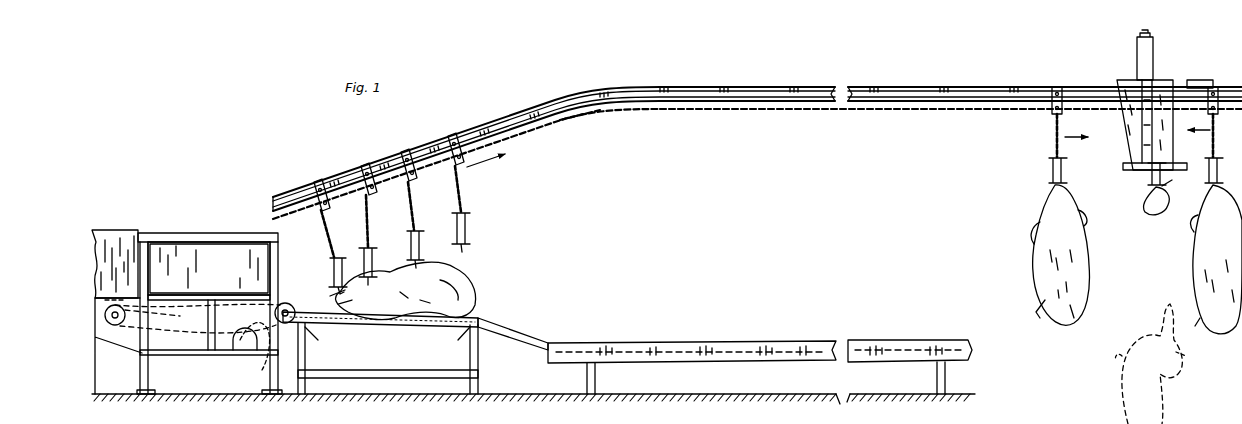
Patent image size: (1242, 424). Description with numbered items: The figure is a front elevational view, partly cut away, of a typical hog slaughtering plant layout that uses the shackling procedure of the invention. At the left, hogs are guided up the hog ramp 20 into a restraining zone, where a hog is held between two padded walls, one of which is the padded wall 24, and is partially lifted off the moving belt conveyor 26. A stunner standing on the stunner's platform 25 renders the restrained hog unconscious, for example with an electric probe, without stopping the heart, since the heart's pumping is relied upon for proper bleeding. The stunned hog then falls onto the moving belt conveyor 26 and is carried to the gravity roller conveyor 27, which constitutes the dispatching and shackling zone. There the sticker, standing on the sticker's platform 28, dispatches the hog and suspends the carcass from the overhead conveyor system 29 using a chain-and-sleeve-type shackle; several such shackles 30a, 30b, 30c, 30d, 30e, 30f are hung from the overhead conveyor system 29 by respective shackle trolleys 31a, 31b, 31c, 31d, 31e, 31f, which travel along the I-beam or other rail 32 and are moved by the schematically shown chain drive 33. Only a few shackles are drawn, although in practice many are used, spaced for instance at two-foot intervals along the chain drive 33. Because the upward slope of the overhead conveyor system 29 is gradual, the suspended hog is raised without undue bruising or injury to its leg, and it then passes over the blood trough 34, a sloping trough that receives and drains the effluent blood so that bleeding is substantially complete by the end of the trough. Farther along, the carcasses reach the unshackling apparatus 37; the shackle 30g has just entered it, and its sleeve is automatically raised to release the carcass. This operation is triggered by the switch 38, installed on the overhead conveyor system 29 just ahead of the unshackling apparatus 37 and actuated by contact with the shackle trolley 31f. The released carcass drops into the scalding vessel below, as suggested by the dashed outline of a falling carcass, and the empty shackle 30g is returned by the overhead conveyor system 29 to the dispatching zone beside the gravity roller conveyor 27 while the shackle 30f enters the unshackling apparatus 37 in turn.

The hog ramp 20 is at (110, 228).
The padded wall 24 is at (214, 273).
The stunner's platform 25 is at (182, 305).
The moving belt conveyor 26 is at (128, 340).
The gravity roller conveyor 27 is at (312, 312).
The sticker's platform 28 is at (408, 372).
The overhead conveyor system 29 is at (778, 86).
The shackle 30a is at (332, 262).
The shackle 30b is at (364, 250).
The shackle 30c is at (410, 234).
The shackle 30d is at (456, 215).
The shackle 30e is at (1050, 165).
The shackle 30f is at (1206, 164).
The shackle 30g is at (1148, 172).
The shackle trolley 31a is at (316, 196).
The shackle trolley 31b is at (360, 180).
The shackle trolley 31c is at (404, 163).
The shackle trolley 31d is at (452, 147).
The shackle trolley 31e is at (1055, 87).
The shackle trolley 31f is at (1230, 88).
The rail 32 is at (698, 93).
The chain drive 33 is at (603, 115).
The blood trough 34 is at (770, 343).
The unshackling apparatus 37 is at (1134, 63).
The switch 38 is at (1197, 80).